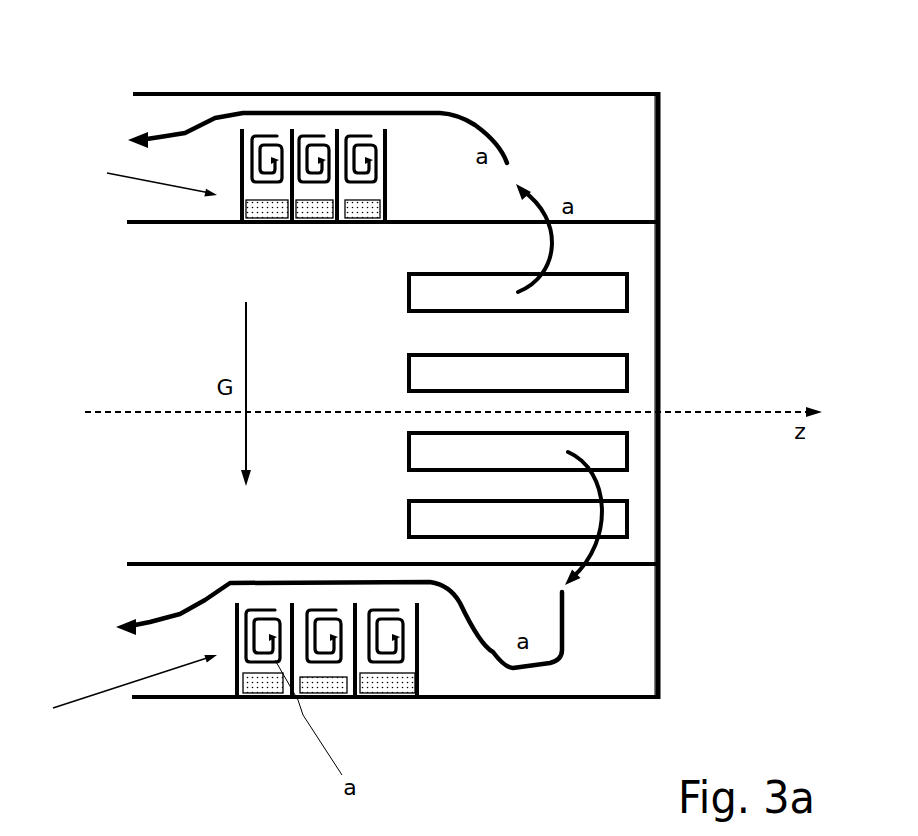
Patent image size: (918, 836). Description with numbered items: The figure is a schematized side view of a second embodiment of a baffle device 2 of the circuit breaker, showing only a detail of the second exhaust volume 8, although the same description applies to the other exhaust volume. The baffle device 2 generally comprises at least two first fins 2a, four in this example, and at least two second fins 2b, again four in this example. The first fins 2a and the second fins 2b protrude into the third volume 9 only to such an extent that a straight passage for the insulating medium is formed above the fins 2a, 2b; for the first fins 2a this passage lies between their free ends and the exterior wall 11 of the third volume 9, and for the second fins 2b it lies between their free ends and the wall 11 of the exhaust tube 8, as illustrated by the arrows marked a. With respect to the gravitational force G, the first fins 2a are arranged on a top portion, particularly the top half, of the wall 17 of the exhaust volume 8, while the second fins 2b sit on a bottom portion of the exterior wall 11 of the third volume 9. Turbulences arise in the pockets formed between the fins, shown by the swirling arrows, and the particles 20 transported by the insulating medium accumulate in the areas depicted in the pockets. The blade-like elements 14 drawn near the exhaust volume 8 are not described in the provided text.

The baffle device 2 is at (135, 430).
The first fins 2a is at (275, 438).
The second fins 2b is at (376, 704).
The second exhaust volume 8 is at (687, 395).
The third volume 9 is at (392, 131).
The exterior wall 11 is at (396, 356).
The turbine blades 14 is at (558, 405).
The wall 17 is at (414, 640).
The particles 20 is at (360, 752).